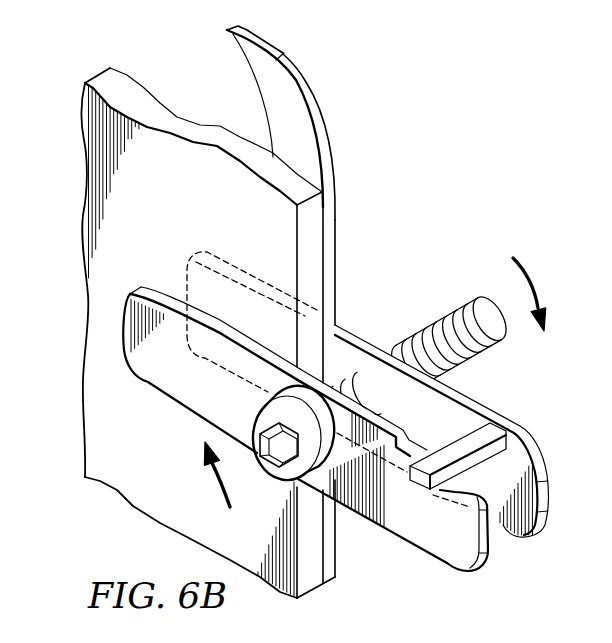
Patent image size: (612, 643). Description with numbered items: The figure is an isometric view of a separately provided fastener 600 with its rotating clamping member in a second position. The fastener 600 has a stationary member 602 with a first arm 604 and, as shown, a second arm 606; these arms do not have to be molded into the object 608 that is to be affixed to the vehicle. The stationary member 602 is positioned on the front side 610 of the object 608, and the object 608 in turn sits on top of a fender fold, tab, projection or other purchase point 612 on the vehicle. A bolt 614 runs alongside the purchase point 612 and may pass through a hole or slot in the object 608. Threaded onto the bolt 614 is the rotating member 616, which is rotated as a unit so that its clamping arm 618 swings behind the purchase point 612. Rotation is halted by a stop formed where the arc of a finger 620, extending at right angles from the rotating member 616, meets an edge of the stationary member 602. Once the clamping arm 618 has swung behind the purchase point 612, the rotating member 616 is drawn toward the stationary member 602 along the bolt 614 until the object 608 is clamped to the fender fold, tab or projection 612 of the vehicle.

The fastener 600 is at (433, 176).
The stationary member 602 is at (399, 547).
The first arm 604 is at (156, 383).
The second arm 606 is at (447, 553).
The object 608 is at (96, 372).
The front side 610 is at (147, 502).
The purchase point 612 is at (312, 108).
The bolt 614 is at (436, 320).
The rotating member 616 is at (510, 403).
The clamping arm 618 is at (188, 282).
The finger 620 is at (461, 455).